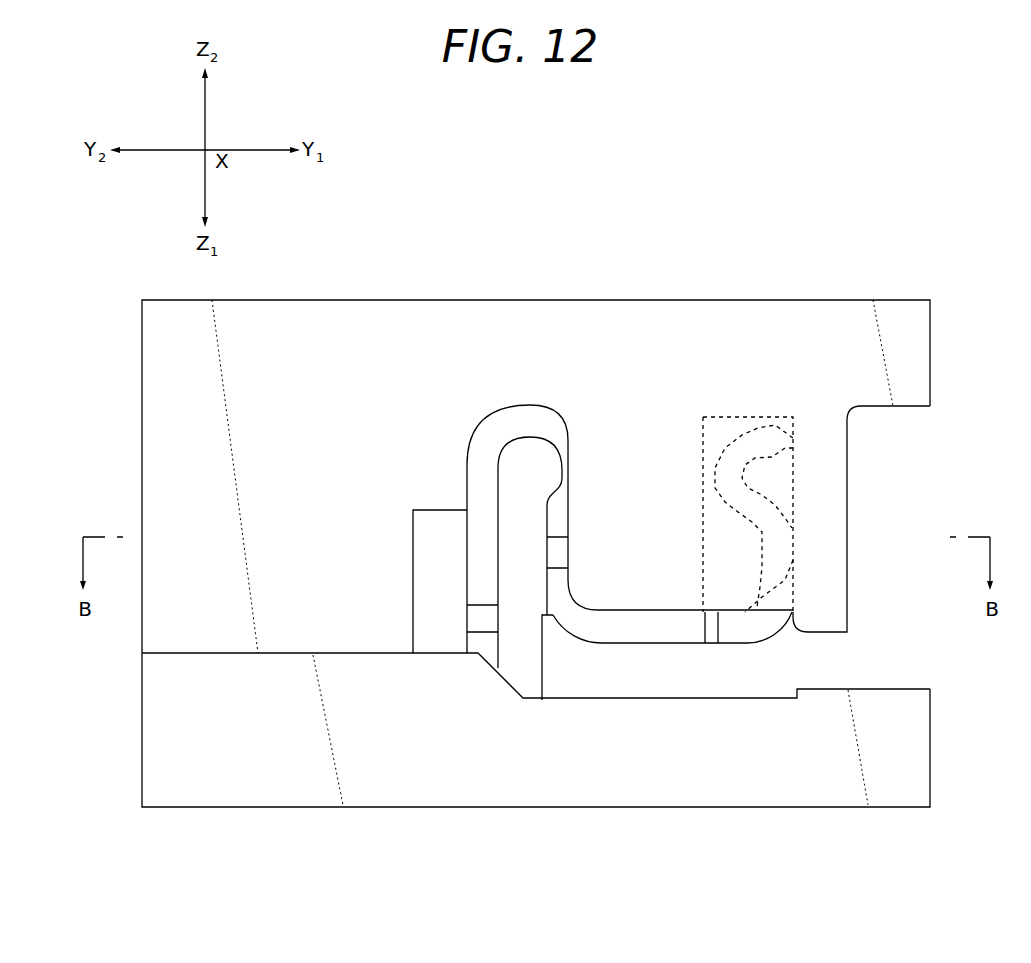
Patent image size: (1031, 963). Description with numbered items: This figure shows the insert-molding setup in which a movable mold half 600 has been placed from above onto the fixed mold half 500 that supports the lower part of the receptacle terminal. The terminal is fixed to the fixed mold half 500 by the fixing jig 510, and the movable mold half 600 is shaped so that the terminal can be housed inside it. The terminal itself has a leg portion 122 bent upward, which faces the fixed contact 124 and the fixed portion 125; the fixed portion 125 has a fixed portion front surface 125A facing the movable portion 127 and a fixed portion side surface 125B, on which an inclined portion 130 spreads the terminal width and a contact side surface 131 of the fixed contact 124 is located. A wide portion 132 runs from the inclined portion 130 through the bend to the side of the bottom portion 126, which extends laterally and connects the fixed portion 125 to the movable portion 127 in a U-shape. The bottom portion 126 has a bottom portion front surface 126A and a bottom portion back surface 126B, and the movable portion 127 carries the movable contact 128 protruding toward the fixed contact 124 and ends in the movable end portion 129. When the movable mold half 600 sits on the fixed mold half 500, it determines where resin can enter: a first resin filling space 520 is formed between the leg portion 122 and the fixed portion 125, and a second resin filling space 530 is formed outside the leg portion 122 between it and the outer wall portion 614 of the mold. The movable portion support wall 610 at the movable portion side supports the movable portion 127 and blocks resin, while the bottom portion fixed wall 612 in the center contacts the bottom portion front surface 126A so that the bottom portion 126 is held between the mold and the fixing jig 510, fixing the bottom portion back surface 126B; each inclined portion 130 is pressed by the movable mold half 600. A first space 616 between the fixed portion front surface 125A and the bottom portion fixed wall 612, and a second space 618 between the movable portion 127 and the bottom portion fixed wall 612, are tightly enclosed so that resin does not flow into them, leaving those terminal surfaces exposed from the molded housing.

The fixed mold half 500 is at (390, 810).
The fixing jig 510 is at (663, 667).
The first resin filling space 520 is at (510, 605).
The second resin filling space 530 is at (438, 598).
The movable mold half 600 is at (465, 298).
The movable portion support wall 610 is at (823, 477).
The bottom portion fixed wall 612 is at (635, 566).
The outer wall portion 614 is at (318, 470).
The first space 616 is at (600, 537).
The second space 618 is at (757, 647).
The leg portion 122 is at (482, 550).
The fixed contact 124 is at (593, 607).
The fixed portion 125 is at (541, 532).
The fixed portion front surface 125A is at (568, 523).
The fixed portion side surface 125B is at (568, 512).
The bottom portion 126 is at (732, 652).
The bottom portion front surface 126A is at (620, 617).
The bottom portion back surface 126B is at (728, 597).
The movable portion 127 is at (778, 553).
The movable contact 128 is at (700, 462).
The movable end portion 129 is at (755, 428).
The inclined portion 130 is at (604, 565).
The contact side surface 131 is at (578, 593).
The wide portion 132 is at (641, 620).